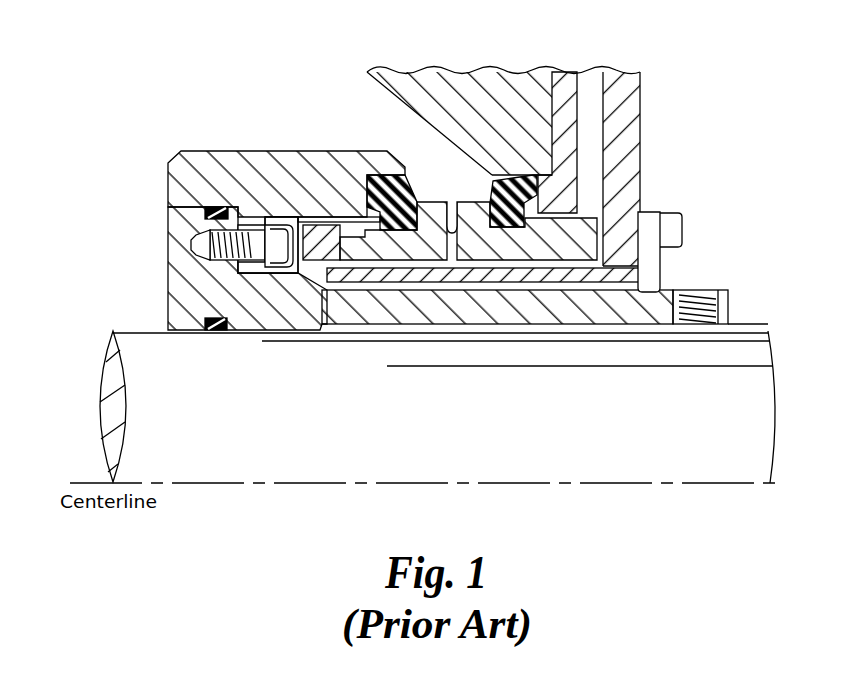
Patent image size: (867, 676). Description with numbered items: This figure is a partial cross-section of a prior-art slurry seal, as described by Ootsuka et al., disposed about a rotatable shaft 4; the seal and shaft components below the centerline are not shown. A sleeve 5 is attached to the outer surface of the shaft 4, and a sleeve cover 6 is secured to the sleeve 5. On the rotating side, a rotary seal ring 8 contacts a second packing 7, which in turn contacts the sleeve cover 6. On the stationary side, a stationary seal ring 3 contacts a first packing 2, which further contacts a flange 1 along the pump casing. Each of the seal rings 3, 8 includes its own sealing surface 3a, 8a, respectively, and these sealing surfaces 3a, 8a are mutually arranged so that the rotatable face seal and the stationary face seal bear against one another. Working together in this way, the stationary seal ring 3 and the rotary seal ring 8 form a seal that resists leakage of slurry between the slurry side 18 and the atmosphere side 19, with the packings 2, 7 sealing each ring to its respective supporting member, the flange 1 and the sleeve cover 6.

The flange 1 is at (438, 90).
The first packing 2 is at (540, 196).
The stationary seal ring 3 is at (527, 245).
The sealing surface 3a is at (437, 203).
The shaft 4 is at (106, 398).
The sleeve 5 is at (180, 280).
The sleeve cover 6 is at (230, 170).
The second packing 7 is at (380, 188).
The rotary seal ring 8 is at (393, 243).
The sealing surface 8a is at (456, 202).
The slurry side 18 is at (282, 89).
The atmosphere side 19 is at (758, 250).